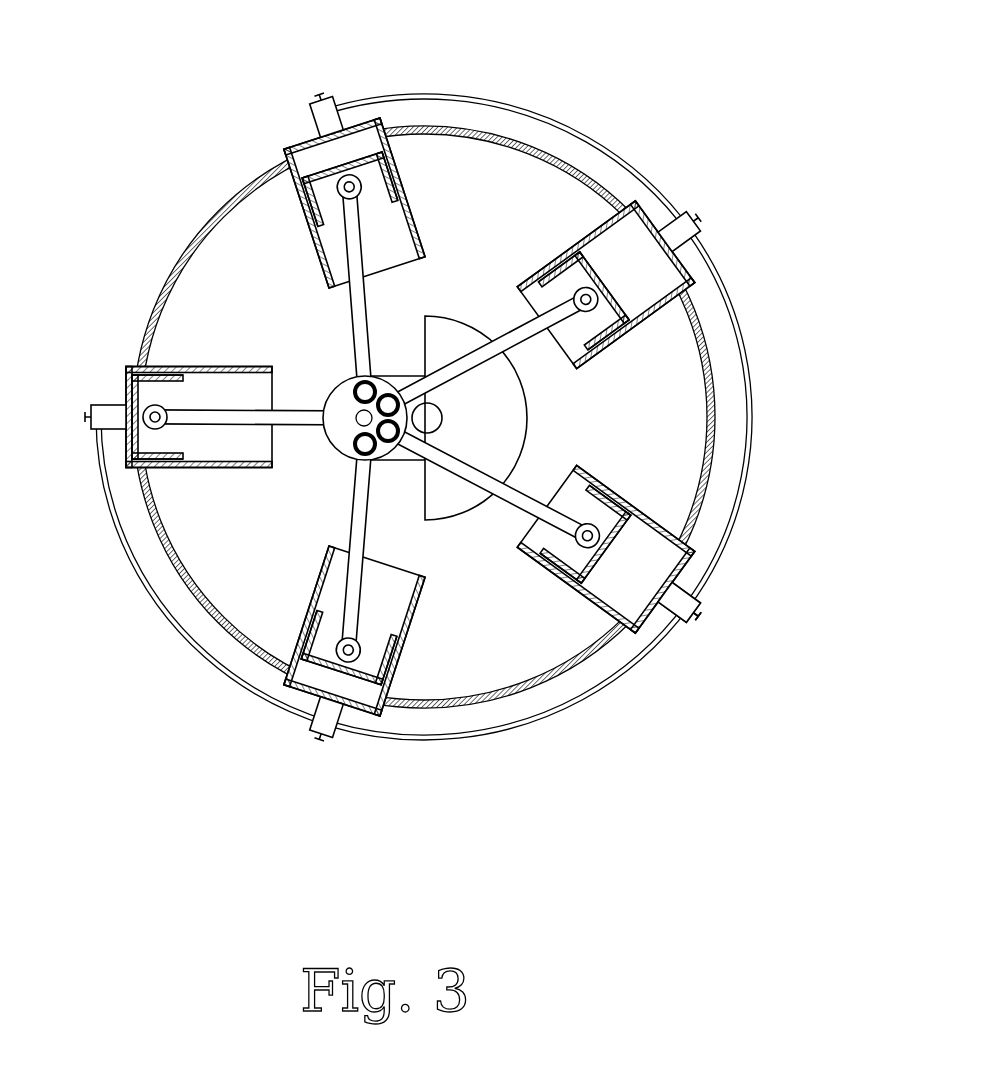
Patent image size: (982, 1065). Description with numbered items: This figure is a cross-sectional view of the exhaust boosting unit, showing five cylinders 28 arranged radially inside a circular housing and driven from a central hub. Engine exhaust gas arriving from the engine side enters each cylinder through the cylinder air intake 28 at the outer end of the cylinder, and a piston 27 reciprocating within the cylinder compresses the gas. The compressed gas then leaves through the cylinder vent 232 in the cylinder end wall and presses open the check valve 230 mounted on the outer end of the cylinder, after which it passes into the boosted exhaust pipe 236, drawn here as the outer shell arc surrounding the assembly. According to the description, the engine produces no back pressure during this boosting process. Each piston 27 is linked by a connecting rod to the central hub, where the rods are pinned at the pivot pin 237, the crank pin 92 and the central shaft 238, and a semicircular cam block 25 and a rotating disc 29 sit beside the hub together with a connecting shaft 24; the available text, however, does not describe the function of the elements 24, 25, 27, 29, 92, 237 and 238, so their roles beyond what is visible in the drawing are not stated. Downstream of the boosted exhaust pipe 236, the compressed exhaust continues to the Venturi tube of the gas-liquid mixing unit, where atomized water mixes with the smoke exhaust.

The connecting shaft 24 is at (440, 417).
The semicircular cam block 25 is at (457, 317).
The piston 27 is at (572, 262).
The cylinder air intake 28 is at (655, 315).
The rotating disc 29 is at (510, 342).
The crank pin 92 is at (350, 432).
The check valve 230 is at (700, 612).
The cylinder vent 232 is at (664, 586).
The boosted exhaust pipe 236 is at (186, 645).
The pivot pin 237 is at (352, 392).
The central shaft 238 is at (350, 430).